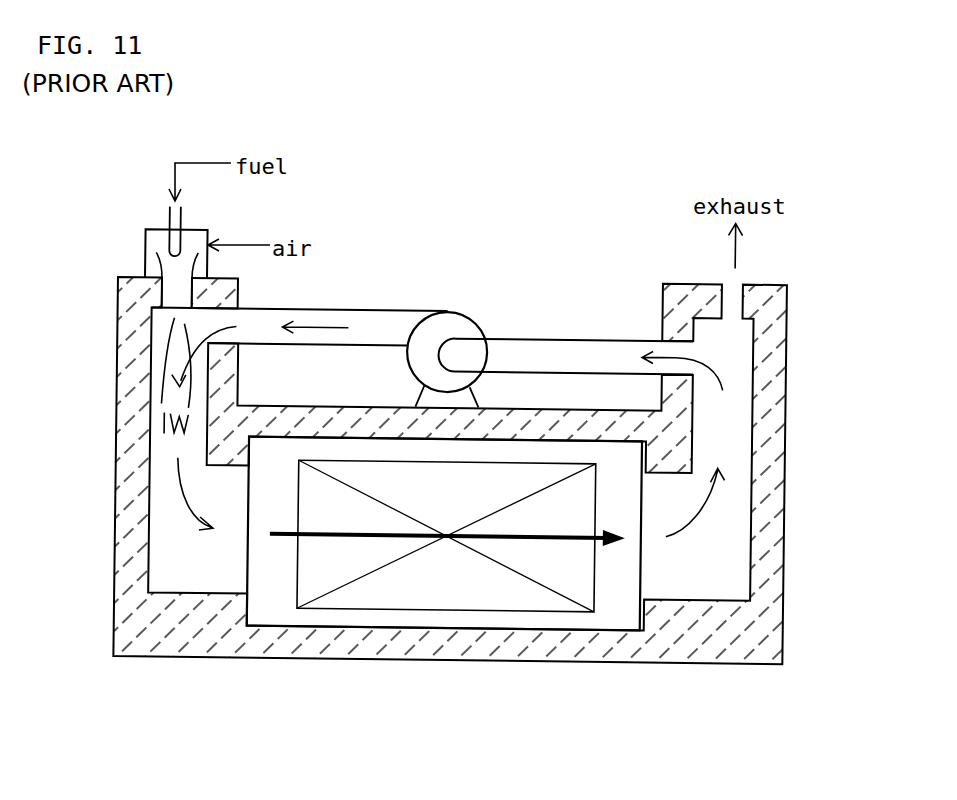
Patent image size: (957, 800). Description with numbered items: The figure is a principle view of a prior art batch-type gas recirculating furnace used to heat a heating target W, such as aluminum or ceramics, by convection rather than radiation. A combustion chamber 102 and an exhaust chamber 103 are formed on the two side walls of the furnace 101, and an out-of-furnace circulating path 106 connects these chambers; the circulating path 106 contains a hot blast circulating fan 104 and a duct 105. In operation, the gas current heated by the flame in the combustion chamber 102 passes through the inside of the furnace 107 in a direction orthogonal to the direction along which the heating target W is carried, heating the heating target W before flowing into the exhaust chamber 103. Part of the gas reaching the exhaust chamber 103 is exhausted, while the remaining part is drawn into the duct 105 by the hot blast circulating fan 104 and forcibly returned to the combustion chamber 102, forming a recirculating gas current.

The furnace 101 is at (512, 647).
The combustion chamber 102 is at (160, 453).
The exhaust chamber 103 is at (730, 438).
The hot blast circulating fan 104 is at (468, 325).
The duct 105 is at (633, 234).
The out-of-furnace circulating path 106 is at (422, 298).
The inside of the furnace 107 is at (412, 620).
The heating target W is at (362, 597).